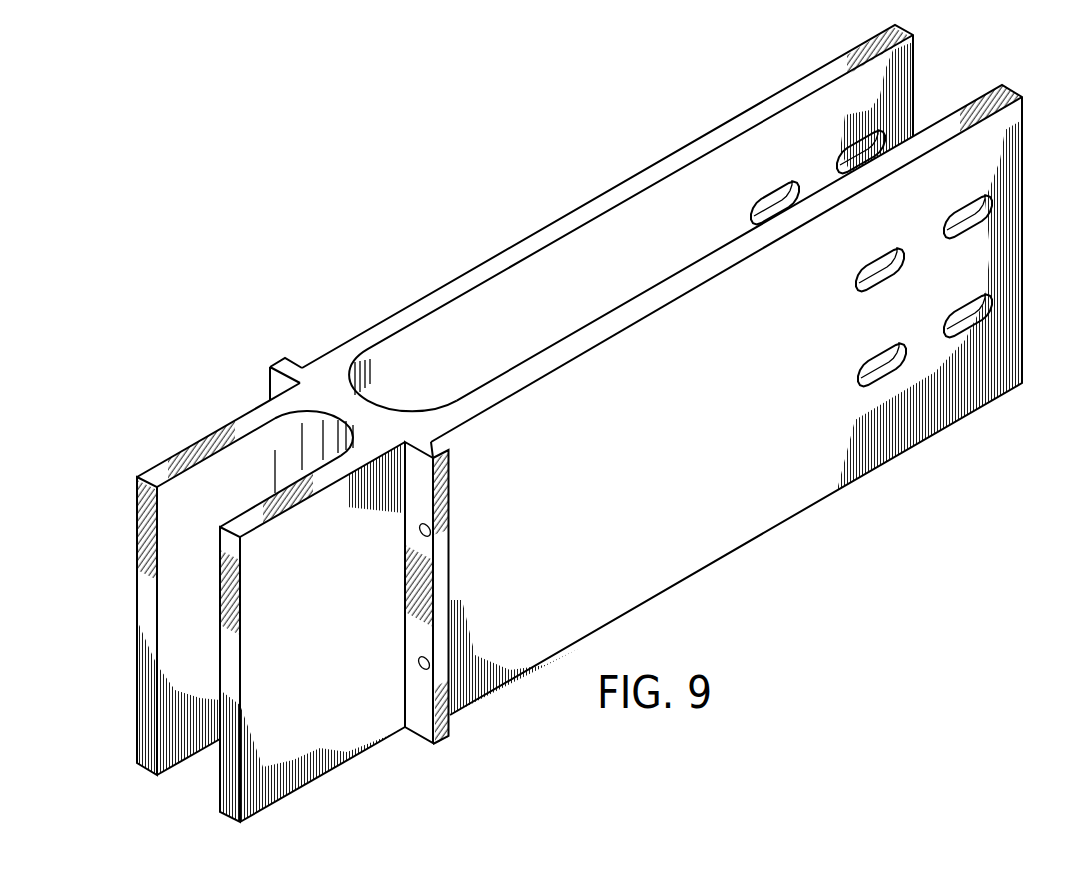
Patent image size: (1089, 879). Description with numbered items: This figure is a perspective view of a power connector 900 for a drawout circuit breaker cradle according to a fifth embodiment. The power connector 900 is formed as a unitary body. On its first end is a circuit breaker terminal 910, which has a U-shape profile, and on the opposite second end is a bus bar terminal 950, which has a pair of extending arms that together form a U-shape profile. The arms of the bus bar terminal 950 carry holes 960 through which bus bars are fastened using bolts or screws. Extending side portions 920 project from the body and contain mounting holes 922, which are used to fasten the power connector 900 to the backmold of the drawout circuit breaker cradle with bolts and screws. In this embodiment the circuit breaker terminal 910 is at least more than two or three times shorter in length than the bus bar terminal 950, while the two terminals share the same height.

The power connector 900 is at (362, 213).
The circuit breaker terminal 910 is at (157, 475).
The extending side portions 920 is at (283, 360).
The mounting holes 922 is at (412, 673).
The bus bar terminal 950 is at (640, 177).
The holes 960 is at (972, 350).